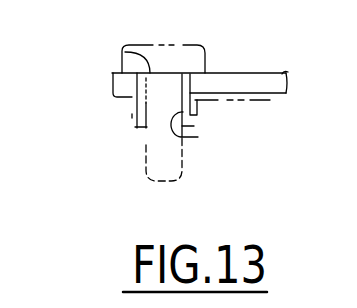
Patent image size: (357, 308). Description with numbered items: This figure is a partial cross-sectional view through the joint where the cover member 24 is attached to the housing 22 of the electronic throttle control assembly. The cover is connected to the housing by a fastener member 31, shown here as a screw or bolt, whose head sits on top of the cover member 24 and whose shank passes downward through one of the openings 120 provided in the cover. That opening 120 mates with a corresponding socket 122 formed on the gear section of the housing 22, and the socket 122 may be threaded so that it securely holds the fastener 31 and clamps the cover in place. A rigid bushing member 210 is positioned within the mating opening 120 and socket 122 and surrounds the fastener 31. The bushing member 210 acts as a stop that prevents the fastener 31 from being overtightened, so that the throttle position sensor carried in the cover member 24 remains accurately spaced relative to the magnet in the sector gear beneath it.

The fastener member 31 is at (208, 60).
The opening 120 is at (122, 53).
The cover member 24 is at (247, 82).
The housing 22 is at (270, 100).
The bushing member 210 is at (138, 105).
The socket 122 is at (198, 139).